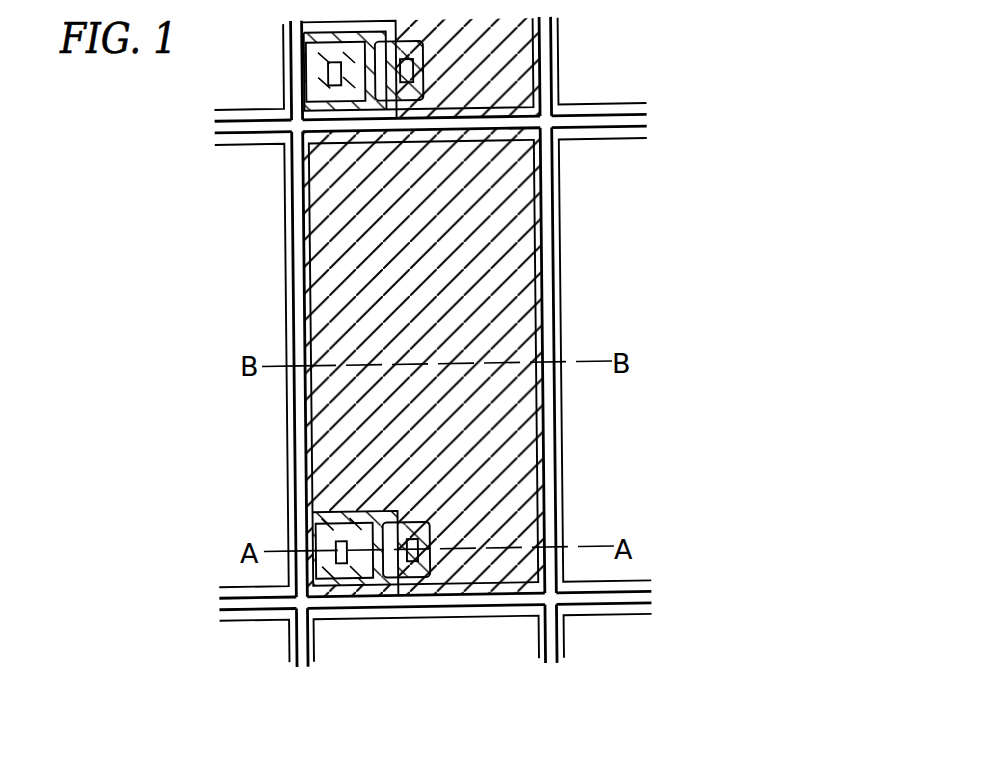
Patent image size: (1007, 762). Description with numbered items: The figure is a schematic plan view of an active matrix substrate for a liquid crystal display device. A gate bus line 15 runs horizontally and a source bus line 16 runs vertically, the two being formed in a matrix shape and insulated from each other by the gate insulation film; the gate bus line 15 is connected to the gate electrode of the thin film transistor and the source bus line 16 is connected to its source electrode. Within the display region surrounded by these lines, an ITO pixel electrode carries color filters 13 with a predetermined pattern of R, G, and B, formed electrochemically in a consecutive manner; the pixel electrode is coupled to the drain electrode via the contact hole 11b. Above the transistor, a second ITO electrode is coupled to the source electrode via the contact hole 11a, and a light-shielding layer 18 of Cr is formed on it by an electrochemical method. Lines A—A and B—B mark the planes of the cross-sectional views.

The contact hole 11a is at (342, 578).
The contact hole 11b is at (418, 578).
The color filters 13 is at (535, 242).
The gate bus line 15 is at (624, 104).
The source bus line 16 is at (557, 66).
The light-shielding layer 18 is at (318, 538).